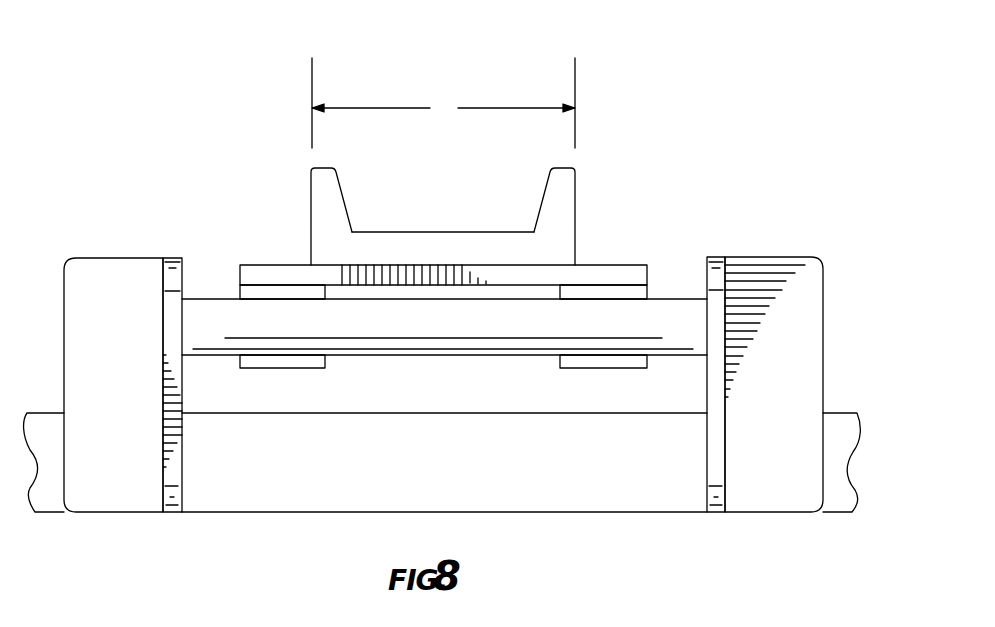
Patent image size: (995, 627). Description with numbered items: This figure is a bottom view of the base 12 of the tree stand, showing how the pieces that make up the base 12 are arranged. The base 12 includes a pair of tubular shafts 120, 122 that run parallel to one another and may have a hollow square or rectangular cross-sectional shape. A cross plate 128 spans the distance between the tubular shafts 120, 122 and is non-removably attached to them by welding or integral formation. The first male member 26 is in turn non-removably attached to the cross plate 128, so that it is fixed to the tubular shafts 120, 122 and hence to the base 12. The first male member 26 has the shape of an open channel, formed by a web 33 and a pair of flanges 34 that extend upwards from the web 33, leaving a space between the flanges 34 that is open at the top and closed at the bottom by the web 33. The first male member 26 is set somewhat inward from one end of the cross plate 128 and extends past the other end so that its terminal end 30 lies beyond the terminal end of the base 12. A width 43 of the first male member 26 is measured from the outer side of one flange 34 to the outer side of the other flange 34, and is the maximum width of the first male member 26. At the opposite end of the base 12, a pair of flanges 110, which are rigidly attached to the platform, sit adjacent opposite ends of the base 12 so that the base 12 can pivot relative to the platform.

The base 12 is at (633, 77).
The first male member 26 is at (465, 206).
The terminal end 30 is at (345, 258).
The web 33 is at (455, 252).
The flanges 34 is at (327, 204).
The width 43 is at (443, 103).
The flanges 110 is at (130, 272).
The tubular shaft 120 is at (240, 292).
The tubular shaft 122 is at (647, 293).
The cross plate 128 is at (620, 270).